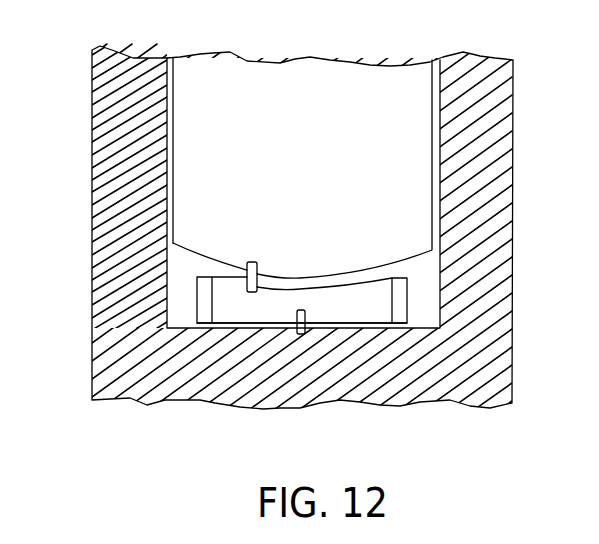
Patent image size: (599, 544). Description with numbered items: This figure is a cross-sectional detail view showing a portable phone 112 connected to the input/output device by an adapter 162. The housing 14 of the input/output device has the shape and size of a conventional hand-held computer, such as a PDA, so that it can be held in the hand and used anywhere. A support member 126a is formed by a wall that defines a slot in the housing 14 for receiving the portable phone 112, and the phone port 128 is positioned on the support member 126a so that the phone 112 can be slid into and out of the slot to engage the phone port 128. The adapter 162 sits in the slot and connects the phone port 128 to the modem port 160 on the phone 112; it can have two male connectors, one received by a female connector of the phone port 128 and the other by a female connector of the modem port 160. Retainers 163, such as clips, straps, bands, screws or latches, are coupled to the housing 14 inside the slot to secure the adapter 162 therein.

The housing 14 is at (518, 212).
The portable phone 112 is at (333, 82).
The support member 126a is at (172, 316).
The modem port 160 is at (257, 256).
The adapter 162 is at (258, 326).
The retainers 163 is at (407, 292).
The phone port 128 is at (302, 335).